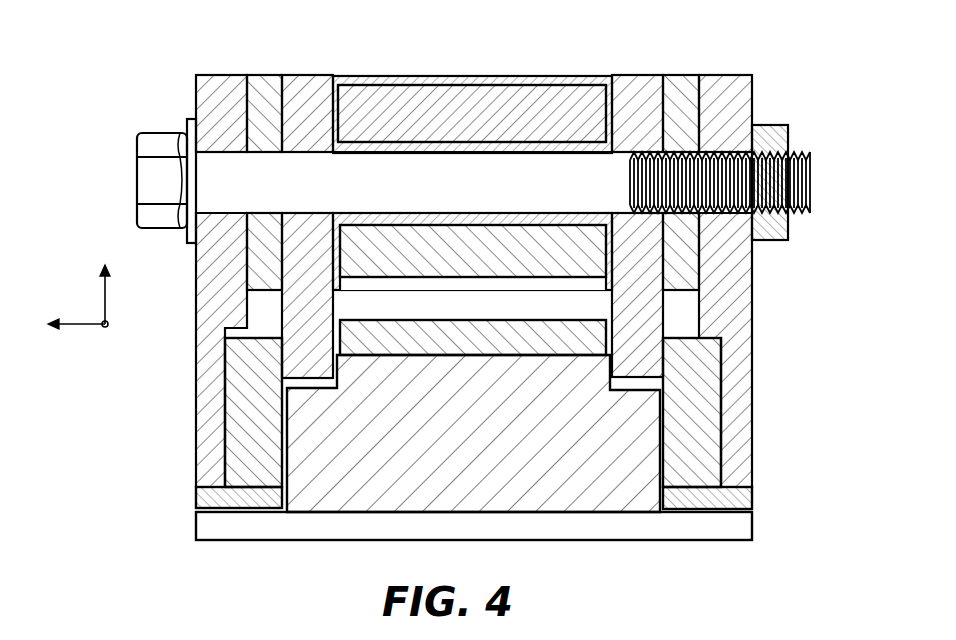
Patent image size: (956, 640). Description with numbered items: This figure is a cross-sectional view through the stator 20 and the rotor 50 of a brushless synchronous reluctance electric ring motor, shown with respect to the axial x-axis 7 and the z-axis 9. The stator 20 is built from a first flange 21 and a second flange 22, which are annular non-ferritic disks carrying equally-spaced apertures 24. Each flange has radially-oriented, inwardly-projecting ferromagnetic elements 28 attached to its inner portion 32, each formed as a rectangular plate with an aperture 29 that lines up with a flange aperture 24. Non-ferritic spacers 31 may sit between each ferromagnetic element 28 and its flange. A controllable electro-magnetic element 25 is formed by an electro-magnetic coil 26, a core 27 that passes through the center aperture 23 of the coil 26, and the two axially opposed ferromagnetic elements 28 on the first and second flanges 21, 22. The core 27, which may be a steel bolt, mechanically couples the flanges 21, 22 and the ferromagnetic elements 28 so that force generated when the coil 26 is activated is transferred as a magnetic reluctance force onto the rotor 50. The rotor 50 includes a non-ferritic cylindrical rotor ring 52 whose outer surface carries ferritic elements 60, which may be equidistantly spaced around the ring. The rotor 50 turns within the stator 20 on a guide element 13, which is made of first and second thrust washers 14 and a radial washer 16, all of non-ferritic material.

The x-axis 7 is at (47, 333).
The z-axis 9 is at (112, 261).
The guide element 13 is at (196, 499).
The first and second thrust washers 14 is at (245, 438).
The radial washer 16 is at (208, 498).
The stator 20 is at (196, 95).
The first flange 21 is at (215, 75).
The second flange 22 is at (725, 75).
The center aperture 23 is at (448, 152).
The equally-spaced apertures 24 is at (232, 152).
The controllable electro-magnetic element 25 is at (645, 74).
The electro-magnetic coil 26 is at (563, 87).
The core 27 is at (793, 153).
The radially-oriented, inwardly-projecting ferromagnetic element 28 is at (297, 322).
The aperture 29 is at (297, 152).
The spacer 31 is at (262, 75).
The inner portion 32 is at (488, 282).
The rotor 50 is at (607, 543).
The rotor ring 52 is at (333, 483).
The ferritic element 60 is at (495, 327).